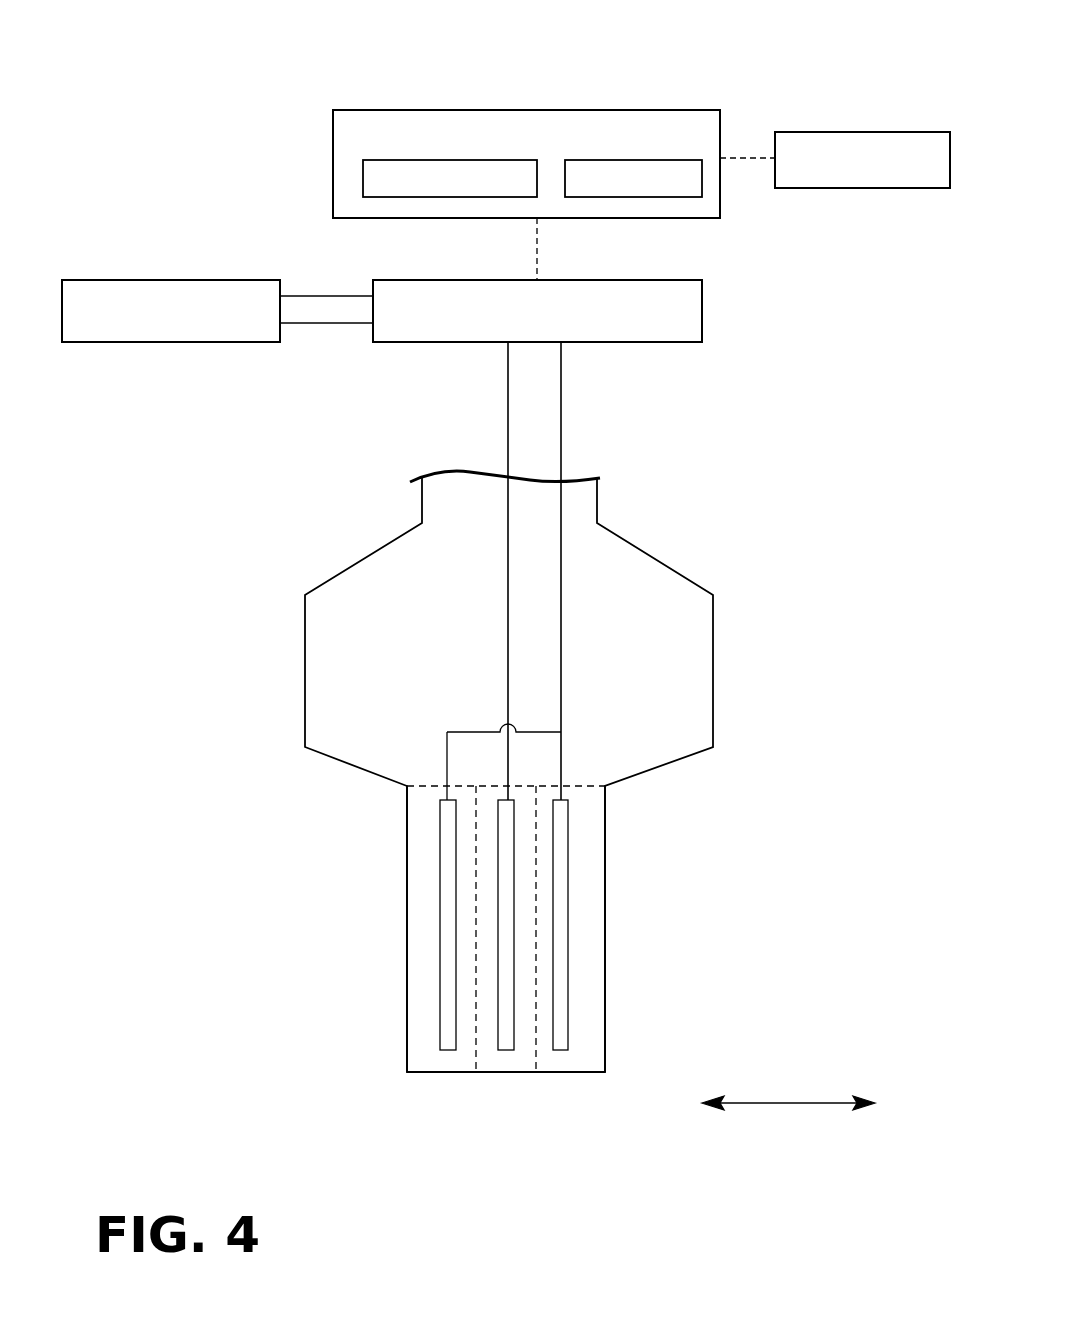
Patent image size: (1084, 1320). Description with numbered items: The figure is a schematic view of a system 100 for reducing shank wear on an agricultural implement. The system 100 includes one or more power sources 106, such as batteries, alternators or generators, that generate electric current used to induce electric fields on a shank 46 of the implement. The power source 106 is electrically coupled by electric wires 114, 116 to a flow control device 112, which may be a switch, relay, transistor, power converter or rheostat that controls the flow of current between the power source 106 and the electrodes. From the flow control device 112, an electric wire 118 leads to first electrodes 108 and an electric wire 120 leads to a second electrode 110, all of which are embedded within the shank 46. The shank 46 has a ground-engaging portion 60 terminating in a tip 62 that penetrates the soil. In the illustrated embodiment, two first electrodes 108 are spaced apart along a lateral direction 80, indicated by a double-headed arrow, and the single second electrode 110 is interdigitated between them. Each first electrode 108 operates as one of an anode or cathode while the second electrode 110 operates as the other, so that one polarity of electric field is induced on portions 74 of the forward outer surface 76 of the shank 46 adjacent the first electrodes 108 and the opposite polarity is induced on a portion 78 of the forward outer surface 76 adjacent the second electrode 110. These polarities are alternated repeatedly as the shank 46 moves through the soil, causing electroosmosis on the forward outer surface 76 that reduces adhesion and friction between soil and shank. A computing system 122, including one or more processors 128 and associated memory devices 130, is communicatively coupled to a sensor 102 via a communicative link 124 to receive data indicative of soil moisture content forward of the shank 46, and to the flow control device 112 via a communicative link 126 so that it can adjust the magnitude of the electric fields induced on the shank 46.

The system for reducing shank wear 100 is at (98, 132).
The computing system 122 is at (433, 110).
The processor 128 is at (363, 175).
The memory device 130 is at (672, 197).
The communicative link 124 is at (748, 158).
The sensor 102 is at (863, 188).
The power source 106 is at (175, 280).
The electric wire 114 is at (348, 296).
The electric wire 116 is at (348, 323).
The flow control device 112 is at (702, 318).
The communicative link 126 is at (537, 240).
The electric wire 120 is at (508, 390).
The electric wire 118 is at (561, 390).
The ground-engaging portion 60 is at (362, 560).
The shank 46 is at (376, 825).
The first electrode 108 is at (443, 888).
The second electrode 110 is at (505, 862).
The portion of forward outer surface 74 is at (422, 978).
The forward outer surface 76 is at (600, 1041).
The portion of forward outer surface 78 is at (518, 1058).
The tip 62 is at (557, 1072).
The lateral direction 80 is at (785, 1103).